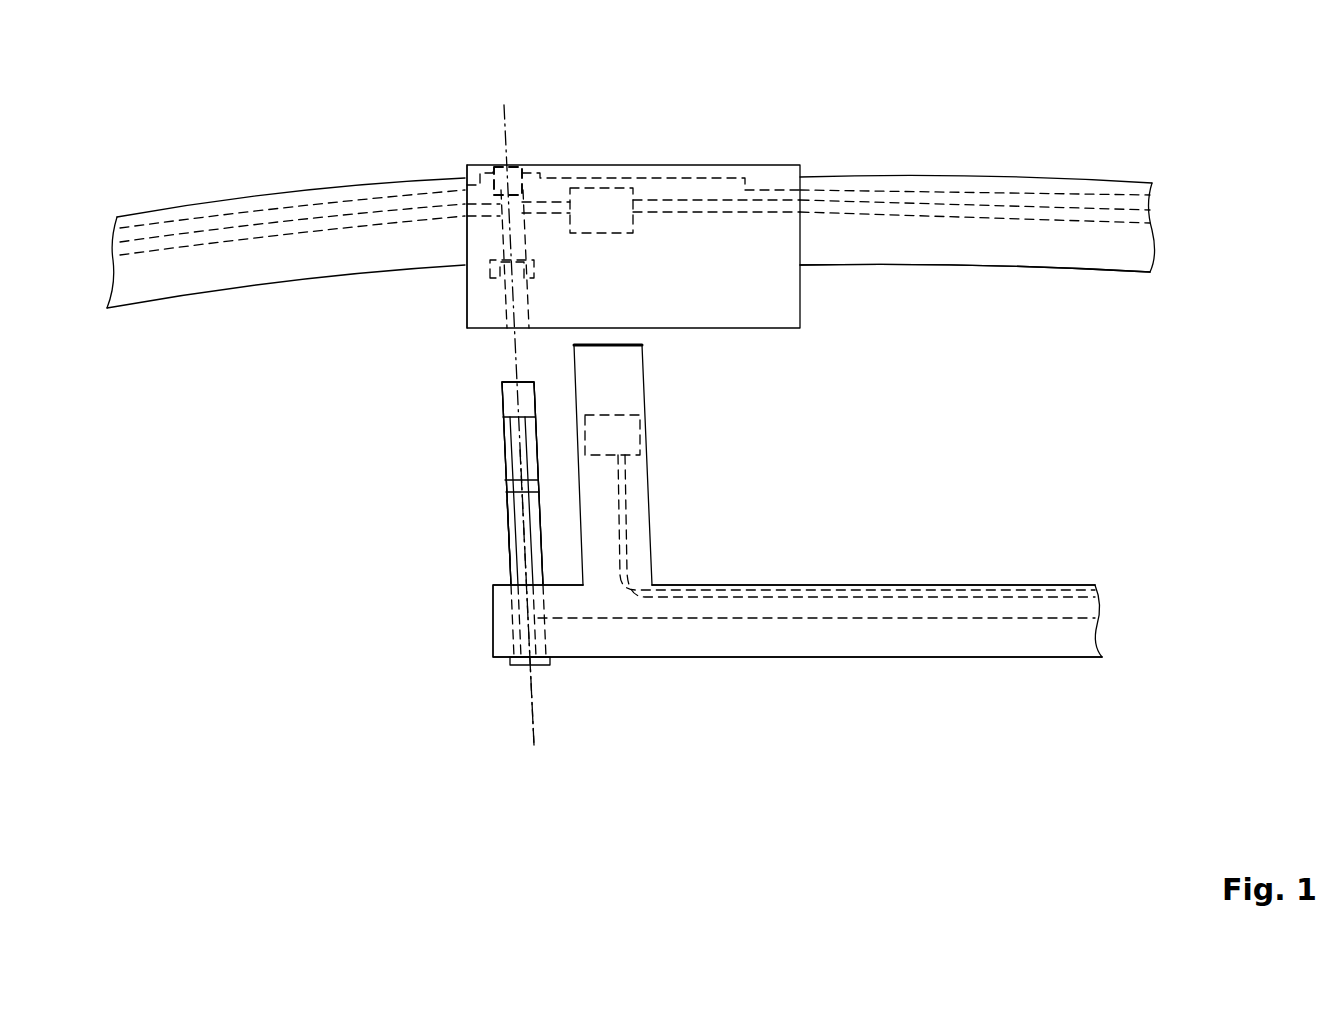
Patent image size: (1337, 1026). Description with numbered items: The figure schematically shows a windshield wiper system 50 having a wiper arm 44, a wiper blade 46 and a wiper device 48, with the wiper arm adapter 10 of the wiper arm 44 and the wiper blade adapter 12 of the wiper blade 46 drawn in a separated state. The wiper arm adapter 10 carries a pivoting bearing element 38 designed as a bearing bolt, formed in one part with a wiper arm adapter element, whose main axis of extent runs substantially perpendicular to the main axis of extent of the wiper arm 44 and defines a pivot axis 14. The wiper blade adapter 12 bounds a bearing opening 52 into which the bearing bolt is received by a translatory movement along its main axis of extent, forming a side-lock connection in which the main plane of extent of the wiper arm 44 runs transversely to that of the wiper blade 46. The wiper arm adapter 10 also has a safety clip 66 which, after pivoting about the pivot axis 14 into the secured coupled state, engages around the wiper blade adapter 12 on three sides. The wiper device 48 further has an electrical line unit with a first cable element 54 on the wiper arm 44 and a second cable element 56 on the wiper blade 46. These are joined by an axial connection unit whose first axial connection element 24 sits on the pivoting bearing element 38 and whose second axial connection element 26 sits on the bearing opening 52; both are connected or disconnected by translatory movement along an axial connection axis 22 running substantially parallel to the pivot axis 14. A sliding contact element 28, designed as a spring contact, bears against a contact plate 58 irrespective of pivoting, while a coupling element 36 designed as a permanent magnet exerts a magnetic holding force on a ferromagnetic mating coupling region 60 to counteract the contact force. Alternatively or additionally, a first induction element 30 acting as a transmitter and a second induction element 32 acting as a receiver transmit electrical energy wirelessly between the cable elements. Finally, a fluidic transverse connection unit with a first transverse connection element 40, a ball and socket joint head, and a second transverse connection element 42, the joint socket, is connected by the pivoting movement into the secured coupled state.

The wiper arm adapter 10 is at (456, 543).
The wiper blade adapter 12 is at (776, 133).
The pivot axis 14 is at (538, 718).
The axial connection axis 22 is at (505, 117).
The first axial connection element 24 is at (512, 400).
The second axial connection element 26 is at (548, 165).
The sliding contact element 28 is at (522, 483).
The first induction element 30 is at (522, 483).
The second induction element 32 is at (508, 181).
The coupling element 36 is at (510, 488).
The pivoting bearing element 38 is at (518, 513).
The first transverse connection element 40 is at (635, 432).
The second transverse connection element 42 is at (615, 234).
The wiper arm 44 is at (792, 640).
The wiper blade 46 is at (1006, 248).
The wiper device 48 is at (438, 332).
The windshield wiper system 50 is at (1128, 748).
The bearing opening 52 is at (522, 300).
The first cable element 54 is at (905, 620).
The second cable element 56 is at (297, 208).
The contact plate 58 is at (508, 181).
The mating coupling region 60 is at (487, 272).
The safety clip 66 is at (622, 378).